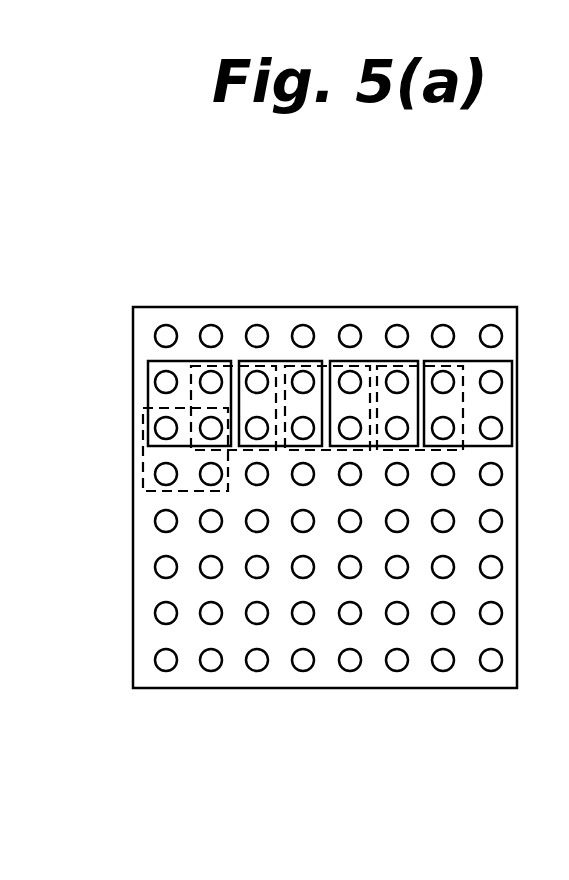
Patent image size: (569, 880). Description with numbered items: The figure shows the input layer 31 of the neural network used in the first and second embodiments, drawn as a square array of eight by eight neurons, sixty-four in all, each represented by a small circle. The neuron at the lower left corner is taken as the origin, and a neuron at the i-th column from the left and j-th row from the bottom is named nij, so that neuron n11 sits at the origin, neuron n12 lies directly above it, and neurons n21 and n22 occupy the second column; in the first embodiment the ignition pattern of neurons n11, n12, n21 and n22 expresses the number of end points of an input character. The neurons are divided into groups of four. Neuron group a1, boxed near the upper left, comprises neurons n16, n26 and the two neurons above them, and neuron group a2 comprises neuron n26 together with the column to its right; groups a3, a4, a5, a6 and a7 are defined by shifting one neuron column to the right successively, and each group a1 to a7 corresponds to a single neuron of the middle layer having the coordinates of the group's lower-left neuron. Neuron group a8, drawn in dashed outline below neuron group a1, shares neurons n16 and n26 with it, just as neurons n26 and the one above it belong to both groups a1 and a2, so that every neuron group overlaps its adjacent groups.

The input layer 31 is at (365, 688).
The neuron group a1 is at (148, 361).
The neuron group a2 is at (191, 365).
The neuron group a3 is at (238, 361).
The neuron group a4 is at (320, 365).
The neuron group a5 is at (372, 361).
The neuron group a6 is at (424, 365).
The neuron group a7 is at (507, 361).
The neuron group a8 is at (143, 486).
The neuron n11 is at (155, 660).
The neuron n12 is at (155, 613).
The neuron n16 is at (155, 428).
The neuron n21 is at (212, 671).
The neuron n22 is at (206, 606).
The neuron n26 is at (204, 420).